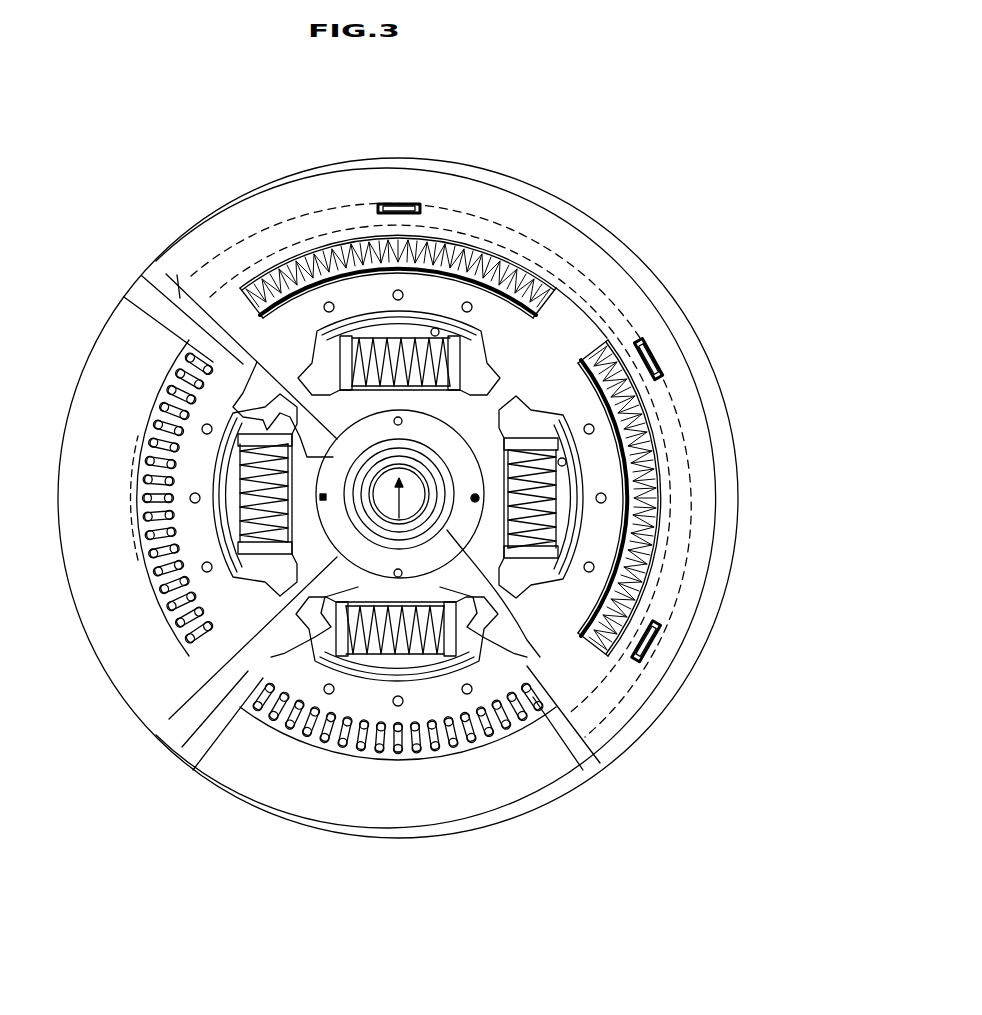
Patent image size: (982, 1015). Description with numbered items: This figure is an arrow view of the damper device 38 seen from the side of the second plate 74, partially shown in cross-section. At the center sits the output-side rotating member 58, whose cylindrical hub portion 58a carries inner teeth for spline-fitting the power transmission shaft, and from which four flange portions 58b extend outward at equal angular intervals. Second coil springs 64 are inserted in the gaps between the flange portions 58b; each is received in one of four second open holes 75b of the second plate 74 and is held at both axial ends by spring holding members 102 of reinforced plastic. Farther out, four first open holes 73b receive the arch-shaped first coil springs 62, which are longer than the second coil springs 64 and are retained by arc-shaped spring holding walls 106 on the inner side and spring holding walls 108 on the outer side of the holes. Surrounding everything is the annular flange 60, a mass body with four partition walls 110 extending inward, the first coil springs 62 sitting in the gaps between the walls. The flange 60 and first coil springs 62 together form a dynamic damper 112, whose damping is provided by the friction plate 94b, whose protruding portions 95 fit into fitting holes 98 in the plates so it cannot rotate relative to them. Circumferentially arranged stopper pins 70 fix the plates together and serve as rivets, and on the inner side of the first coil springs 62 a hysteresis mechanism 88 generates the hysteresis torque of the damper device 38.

The damper device 38 is at (587, 142).
The output-side rotating member 58 is at (492, 664).
The hub portion 58a is at (165, 718).
The flange portion 58b is at (172, 279).
The flange 60 is at (215, 247).
The first coil spring 62 is at (323, 245).
The second coil spring 64 is at (370, 394).
The stopper pin 70 is at (324, 309).
The first open hole 73b is at (353, 249).
The second plate 74 is at (570, 302).
The second open hole 75b is at (437, 328).
The hysteresis mechanism 88 is at (417, 642).
The friction plate 94b is at (512, 232).
The protruding portion 95 is at (413, 204).
The fitting hole 98 is at (380, 204).
The spring holding member 102 is at (330, 359).
The spring holding wall 106 is at (271, 303).
The spring holding wall 108 is at (440, 242).
The partition wall 110 is at (124, 297).
The dynamic damper 112 is at (495, 170).